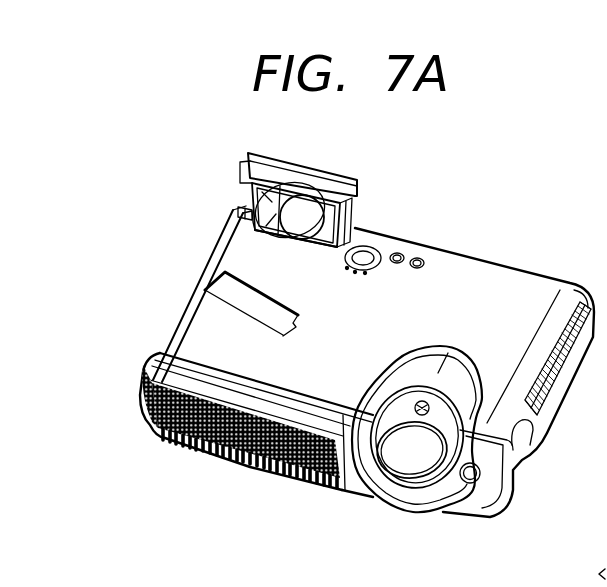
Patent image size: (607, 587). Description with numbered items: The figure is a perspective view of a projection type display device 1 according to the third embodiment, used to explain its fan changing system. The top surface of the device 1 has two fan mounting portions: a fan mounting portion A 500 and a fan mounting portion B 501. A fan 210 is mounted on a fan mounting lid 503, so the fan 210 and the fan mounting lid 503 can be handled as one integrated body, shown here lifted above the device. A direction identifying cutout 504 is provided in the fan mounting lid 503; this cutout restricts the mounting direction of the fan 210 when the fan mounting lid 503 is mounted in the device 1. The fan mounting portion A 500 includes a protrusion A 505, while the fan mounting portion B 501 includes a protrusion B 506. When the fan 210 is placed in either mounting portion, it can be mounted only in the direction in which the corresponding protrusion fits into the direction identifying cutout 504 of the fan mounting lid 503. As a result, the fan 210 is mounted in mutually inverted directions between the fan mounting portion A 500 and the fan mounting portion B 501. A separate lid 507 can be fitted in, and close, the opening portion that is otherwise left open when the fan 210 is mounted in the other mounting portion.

The projection type display device 1 is at (518, 291).
The fan 210 is at (353, 212).
The fan mounting portion A 500 is at (240, 318).
The fan mounting portion B 501 is at (322, 247).
The fan mounting lid 503 is at (317, 177).
The direction identifying cutout 504 is at (243, 170).
The protrusion A 505 is at (283, 338).
The protrusion B 506 is at (250, 208).
The lid 507 is at (207, 288).